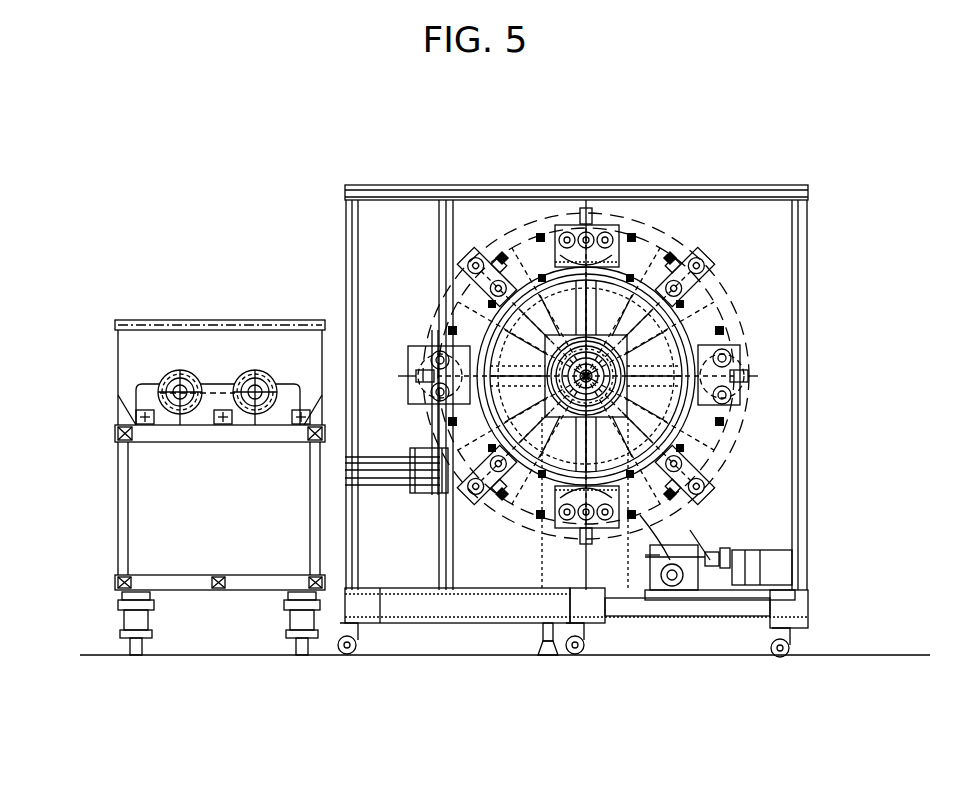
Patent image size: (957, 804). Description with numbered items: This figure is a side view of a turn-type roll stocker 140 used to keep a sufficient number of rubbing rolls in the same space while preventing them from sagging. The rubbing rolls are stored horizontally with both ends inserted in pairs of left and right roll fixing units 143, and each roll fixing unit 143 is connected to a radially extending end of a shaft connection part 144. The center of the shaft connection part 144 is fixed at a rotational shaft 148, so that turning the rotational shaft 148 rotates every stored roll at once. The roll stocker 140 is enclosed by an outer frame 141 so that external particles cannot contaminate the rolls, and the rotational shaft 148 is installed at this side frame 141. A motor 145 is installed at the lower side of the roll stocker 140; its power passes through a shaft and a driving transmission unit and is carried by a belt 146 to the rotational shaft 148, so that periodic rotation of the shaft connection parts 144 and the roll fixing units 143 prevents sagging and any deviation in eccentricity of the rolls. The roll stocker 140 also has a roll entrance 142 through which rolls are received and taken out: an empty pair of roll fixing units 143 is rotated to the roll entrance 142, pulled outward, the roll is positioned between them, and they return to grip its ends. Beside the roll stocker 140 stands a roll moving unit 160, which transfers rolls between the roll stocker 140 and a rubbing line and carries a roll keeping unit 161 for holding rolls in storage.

The roll stocker 140 is at (402, 176).
The outer frame 141 is at (808, 232).
The roll entrance 142 is at (393, 598).
The roll fixing unit 143 is at (700, 390).
The shaft connection part 144 is at (745, 300).
The motor 145 is at (672, 600).
The belt 146 is at (668, 532).
The rotational shaft 148 is at (655, 420).
The roll moving unit 160 is at (164, 307).
The roll keeping unit 161 is at (140, 405).